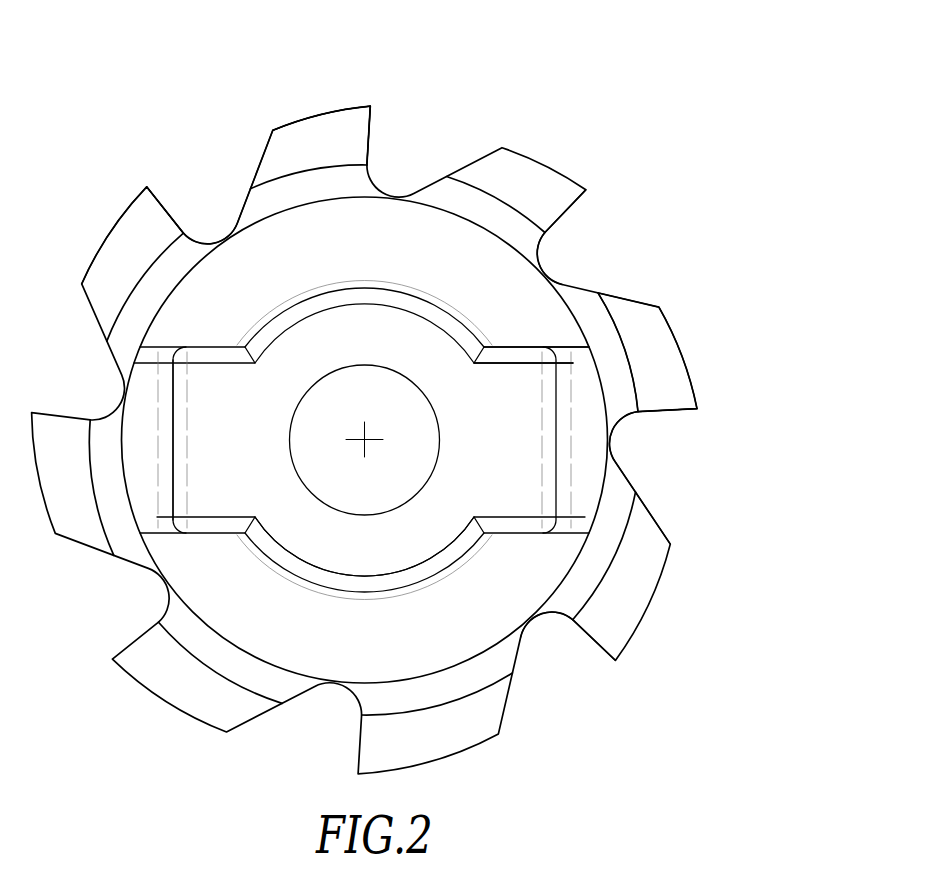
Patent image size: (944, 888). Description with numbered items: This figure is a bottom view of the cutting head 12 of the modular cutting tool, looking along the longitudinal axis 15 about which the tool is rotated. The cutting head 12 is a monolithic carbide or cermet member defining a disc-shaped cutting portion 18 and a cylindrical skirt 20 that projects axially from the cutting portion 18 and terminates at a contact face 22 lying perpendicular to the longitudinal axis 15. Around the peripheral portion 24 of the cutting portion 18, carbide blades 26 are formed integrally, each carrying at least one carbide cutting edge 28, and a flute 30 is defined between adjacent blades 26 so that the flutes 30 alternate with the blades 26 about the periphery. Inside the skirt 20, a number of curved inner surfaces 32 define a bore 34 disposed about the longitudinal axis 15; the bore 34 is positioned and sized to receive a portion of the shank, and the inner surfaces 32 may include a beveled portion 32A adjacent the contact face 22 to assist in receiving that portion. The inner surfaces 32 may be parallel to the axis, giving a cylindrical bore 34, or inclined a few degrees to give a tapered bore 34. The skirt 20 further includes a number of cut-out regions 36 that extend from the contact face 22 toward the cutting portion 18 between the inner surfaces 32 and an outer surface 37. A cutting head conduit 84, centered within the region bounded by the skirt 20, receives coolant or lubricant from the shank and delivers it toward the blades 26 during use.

The cutting head 12 is at (568, 108).
The longitudinal axis 15 is at (367, 440).
The cutting portion 18 is at (603, 330).
The skirt 20 is at (592, 457).
The contact face 22 is at (512, 273).
The peripheral portion 24 is at (360, 86).
The carbide blades 26 is at (352, 140).
The cutting edge 28 is at (371, 106).
The flute 30 is at (210, 203).
The curved inner surfaces 32 is at (462, 533).
The beveled portion 32A is at (385, 285).
The bore 34 is at (305, 535).
The cut-out regions 36 is at (525, 378).
The outer surface 37 is at (487, 228).
The cutting head conduit 84 is at (312, 415).